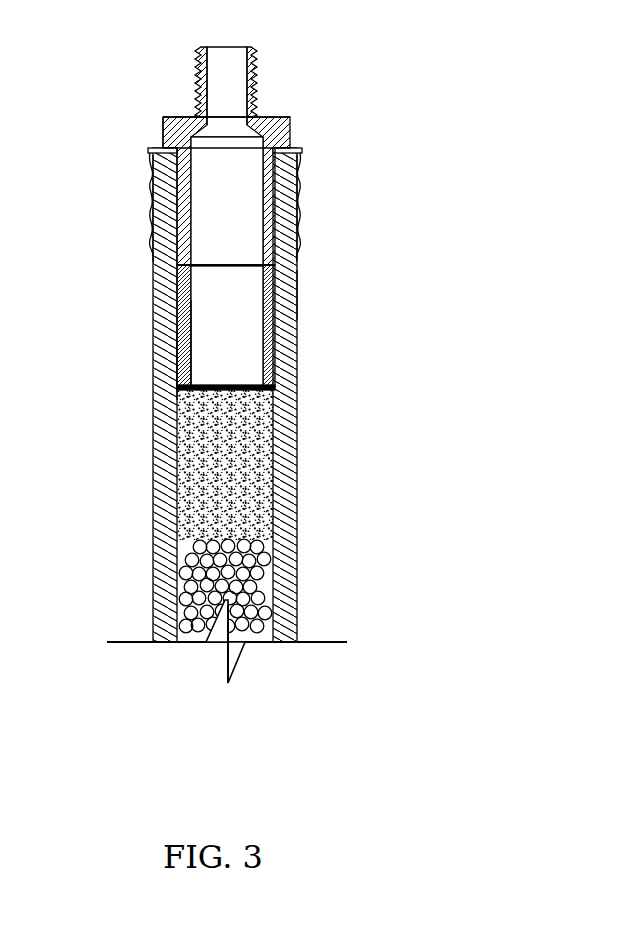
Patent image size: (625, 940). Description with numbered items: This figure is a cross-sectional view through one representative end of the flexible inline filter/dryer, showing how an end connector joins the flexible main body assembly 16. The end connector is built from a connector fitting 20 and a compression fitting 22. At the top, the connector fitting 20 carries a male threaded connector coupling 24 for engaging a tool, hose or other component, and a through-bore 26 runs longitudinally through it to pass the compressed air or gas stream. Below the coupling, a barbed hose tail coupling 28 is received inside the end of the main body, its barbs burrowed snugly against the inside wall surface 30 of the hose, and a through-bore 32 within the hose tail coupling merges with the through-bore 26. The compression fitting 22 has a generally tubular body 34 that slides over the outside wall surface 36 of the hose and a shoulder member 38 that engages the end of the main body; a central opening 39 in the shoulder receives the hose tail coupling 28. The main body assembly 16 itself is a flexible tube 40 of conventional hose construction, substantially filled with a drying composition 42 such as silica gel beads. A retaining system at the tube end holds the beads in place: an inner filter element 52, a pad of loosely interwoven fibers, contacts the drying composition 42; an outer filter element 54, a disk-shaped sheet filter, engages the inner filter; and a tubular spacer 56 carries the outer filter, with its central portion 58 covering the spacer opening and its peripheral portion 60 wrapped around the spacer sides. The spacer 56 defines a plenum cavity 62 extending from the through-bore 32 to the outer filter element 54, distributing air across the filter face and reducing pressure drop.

The main body assembly 16 is at (135, 452).
The connector fitting 20 is at (148, 100).
The compression fitting 22 is at (312, 210).
The threaded connector coupling 24 is at (258, 72).
The through-bore 26 is at (232, 47).
The barbed hose tail coupling 28 is at (188, 262).
The inside wall surface 30 is at (278, 238).
The through-bore 32 is at (240, 201).
The tubular body 34 is at (302, 170).
The outside wall surface 36 is at (298, 295).
The shoulder member 38 is at (291, 118).
The central opening 39 is at (165, 125).
The flexible tube 40 is at (285, 495).
The drying composition 42 is at (252, 571).
The inner filter element 52 is at (268, 430).
The outer filter element 54 is at (277, 386).
The spacer 56 is at (270, 312).
The central portion 58 is at (176, 363).
The peripheral portion 60 is at (262, 356).
The plenum cavity 62 is at (240, 304).